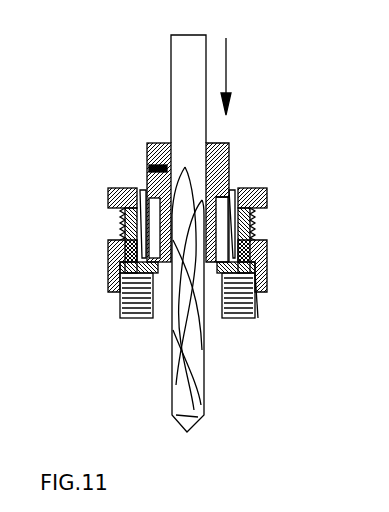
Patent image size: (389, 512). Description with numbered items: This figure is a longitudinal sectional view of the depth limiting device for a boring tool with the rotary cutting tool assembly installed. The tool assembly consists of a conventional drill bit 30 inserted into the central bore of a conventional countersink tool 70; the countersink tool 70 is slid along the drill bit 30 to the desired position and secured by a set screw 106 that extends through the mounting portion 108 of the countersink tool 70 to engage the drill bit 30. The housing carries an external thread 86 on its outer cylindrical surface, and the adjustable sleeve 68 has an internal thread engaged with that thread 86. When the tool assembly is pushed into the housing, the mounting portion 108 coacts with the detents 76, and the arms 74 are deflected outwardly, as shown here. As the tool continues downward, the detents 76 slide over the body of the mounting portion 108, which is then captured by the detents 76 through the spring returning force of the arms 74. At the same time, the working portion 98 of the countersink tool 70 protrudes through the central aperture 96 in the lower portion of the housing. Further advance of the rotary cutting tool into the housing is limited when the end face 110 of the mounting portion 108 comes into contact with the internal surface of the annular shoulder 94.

The drill bit 30 is at (188, 133).
The countersink tool 70 is at (213, 142).
The mounting portion 108 is at (229, 160).
The set screw 106 is at (147, 167).
The external thread 86 is at (121, 223).
The detents 76 is at (256, 207).
The arms 74 is at (264, 243).
The adjustable sleeve 68 is at (262, 283).
The annular shoulder 94 is at (258, 315).
The central aperture 96 is at (222, 320).
The working portion 98 is at (153, 322).
The end face 110 is at (120, 318).